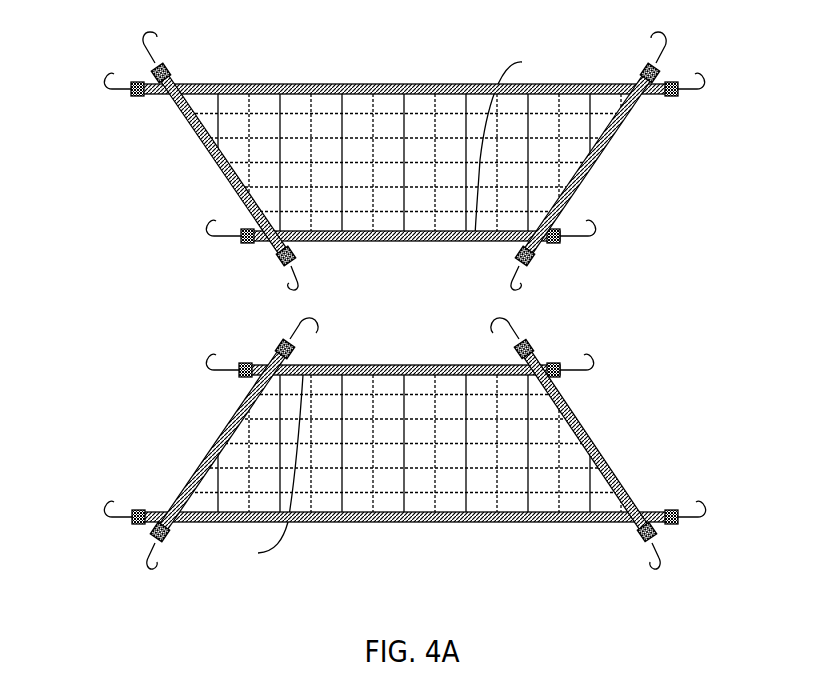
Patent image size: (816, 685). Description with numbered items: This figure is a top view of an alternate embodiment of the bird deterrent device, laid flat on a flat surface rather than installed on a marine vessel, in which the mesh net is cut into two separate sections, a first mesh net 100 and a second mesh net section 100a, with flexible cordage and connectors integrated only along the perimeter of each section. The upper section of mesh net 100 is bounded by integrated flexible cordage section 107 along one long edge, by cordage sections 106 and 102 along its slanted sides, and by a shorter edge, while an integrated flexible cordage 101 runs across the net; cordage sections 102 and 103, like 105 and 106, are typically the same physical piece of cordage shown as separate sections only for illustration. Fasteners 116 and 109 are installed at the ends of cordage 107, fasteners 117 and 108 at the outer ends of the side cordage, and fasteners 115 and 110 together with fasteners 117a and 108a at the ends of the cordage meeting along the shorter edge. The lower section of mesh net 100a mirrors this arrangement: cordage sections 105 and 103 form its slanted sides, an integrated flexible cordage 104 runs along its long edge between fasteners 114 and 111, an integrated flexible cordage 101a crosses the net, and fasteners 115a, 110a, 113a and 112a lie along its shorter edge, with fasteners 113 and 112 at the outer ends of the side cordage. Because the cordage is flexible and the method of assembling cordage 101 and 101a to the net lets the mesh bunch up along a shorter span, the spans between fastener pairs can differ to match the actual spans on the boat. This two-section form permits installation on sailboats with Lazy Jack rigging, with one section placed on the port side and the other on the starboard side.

The mesh net 100 is at (386, 112).
The mesh net section 100a is at (389, 497).
The integrated flexible cordage 101 is at (517, 142).
The integrated flexible cordage 101a is at (257, 471).
The integrated flexible cordage section 102 is at (598, 157).
The integrated flexible cordage section 103 is at (591, 440).
The integrated flexible cordage section 104 is at (490, 523).
The integrated flexible cordage section 105 is at (214, 445).
The integrated flexible cordage section 106 is at (226, 175).
The integrated flexible cordage section 107 is at (322, 84).
The fastener 108 is at (668, 45).
The fastener 108a is at (508, 284).
The fastener 109 is at (704, 80).
The fastener 110 is at (594, 227).
The fastener 110a is at (592, 361).
The fastener 111 is at (705, 508).
The fastener 112 is at (660, 562).
The fastener 112a is at (512, 330).
The fastener 113 is at (148, 560).
The fastener 113a is at (297, 330).
The fastener 114 is at (105, 508).
The fastener 115 is at (208, 227).
The fastener 115a is at (208, 361).
The fastener 116 is at (105, 80).
The fastener 117 is at (140, 45).
The fastener 117a is at (300, 284).